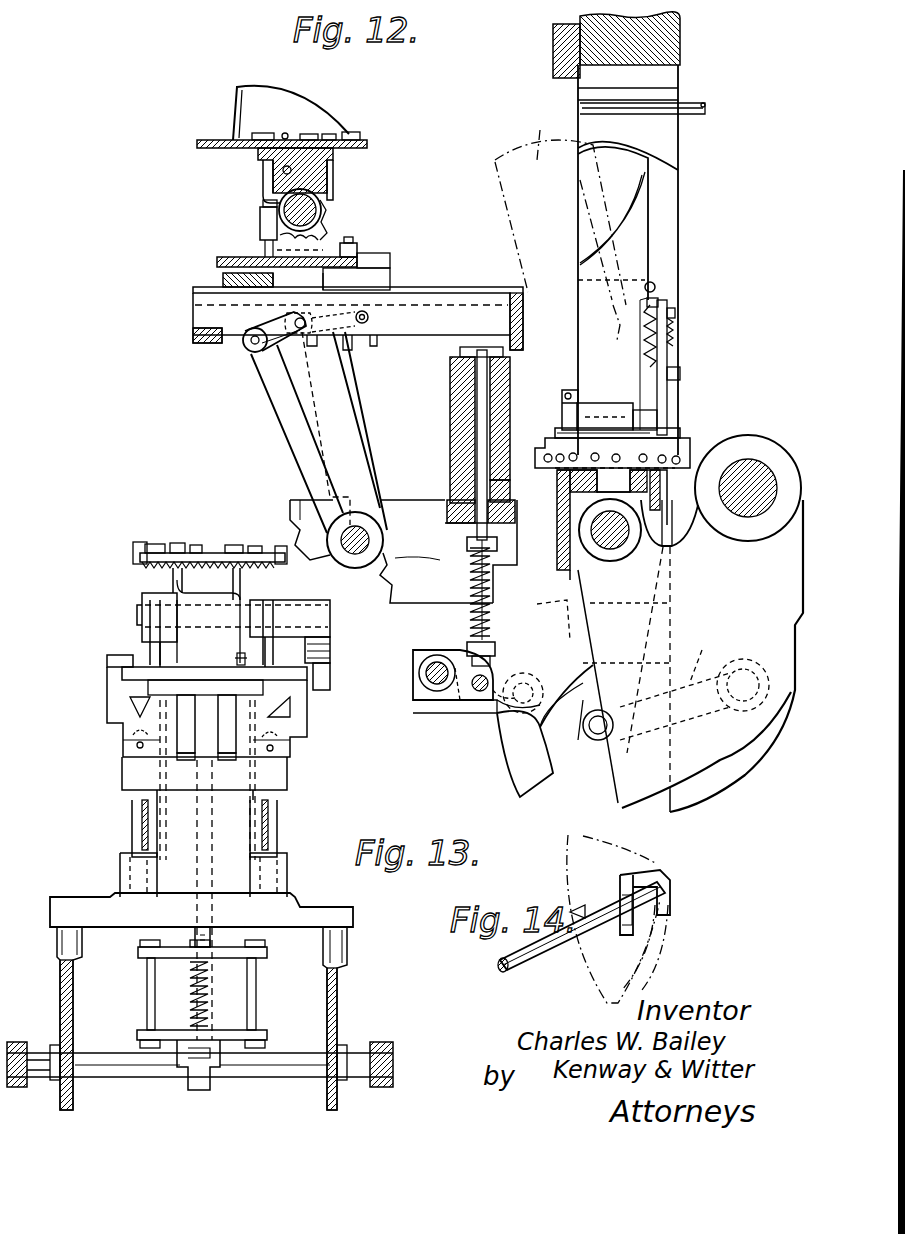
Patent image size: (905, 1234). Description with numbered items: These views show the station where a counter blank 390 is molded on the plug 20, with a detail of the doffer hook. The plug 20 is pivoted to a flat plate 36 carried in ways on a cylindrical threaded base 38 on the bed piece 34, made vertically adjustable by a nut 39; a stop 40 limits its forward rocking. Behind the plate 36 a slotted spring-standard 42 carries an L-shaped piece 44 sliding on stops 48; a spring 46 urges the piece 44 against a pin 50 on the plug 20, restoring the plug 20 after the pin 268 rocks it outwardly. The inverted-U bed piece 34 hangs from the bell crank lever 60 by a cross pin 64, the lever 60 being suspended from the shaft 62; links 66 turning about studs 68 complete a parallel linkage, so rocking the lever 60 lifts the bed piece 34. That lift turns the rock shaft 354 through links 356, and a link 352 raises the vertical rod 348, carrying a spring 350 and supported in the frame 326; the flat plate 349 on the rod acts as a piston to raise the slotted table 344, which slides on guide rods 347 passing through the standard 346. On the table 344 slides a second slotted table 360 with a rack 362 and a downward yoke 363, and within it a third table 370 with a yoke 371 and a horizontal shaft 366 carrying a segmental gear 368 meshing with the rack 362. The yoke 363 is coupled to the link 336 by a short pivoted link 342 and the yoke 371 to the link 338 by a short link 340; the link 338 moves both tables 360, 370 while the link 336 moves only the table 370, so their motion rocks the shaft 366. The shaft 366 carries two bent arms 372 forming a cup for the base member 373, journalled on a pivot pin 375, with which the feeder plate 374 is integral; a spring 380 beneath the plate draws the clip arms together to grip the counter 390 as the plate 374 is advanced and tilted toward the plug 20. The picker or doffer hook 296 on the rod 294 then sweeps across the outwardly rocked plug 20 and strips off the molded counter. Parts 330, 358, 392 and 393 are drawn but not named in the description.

In FIG. 12, the plug 20 is at (640, 227).
In FIG. 12, the pin 268 is at (656, 288).
In FIG. 12, the bed piece 34 is at (585, 743).
In FIG. 12, the flat plate 36 is at (565, 428).
In FIG. 12, the cylindrical threaded base 38 is at (660, 432).
In FIG. 12, the nut 39 is at (678, 448).
In FIG. 12, the stop 40 is at (640, 412).
In FIG. 12, the slotted spring-standard 42 is at (667, 393).
In FIG. 12, the L-shaped piece 44 is at (675, 313).
In FIG. 12, the spring 46 is at (645, 333).
In FIG. 12, the stops 48 is at (676, 338).
In FIG. 12, the pin 50 is at (680, 373).
In FIG. 12, the bell crank lever 60 is at (625, 796).
In FIG. 12, the shaft 62 is at (758, 470).
In FIG. 12, the cross pin 64 is at (615, 545).
In FIG. 12, the links 66 is at (703, 655).
In FIG. 12, the studs 68 is at (743, 682).
In FIG. 14, the rod 294 is at (520, 972).
In FIG. 14, the picker 296 is at (660, 878).
In FIG. 12, the frame 326 is at (413, 665).
In FIG. 13, the frame 326 is at (337, 1012).
In FIG. 12, the hub 330 is at (353, 555).
In FIG. 12, the link 336 is at (345, 398).
In FIG. 13, the link 336 is at (228, 737).
In FIG. 12, the link 338 is at (304, 460).
In FIG. 13, the link 338 is at (182, 732).
In FIG. 12, the short link 340 is at (252, 364).
In FIG. 12, the short pivoted link 342 is at (338, 340).
In FIG. 12, the slotted table 344 is at (455, 300).
In FIG. 13, the slotted table 344 is at (107, 725).
In FIG. 12, the standard 346 is at (410, 417).
In FIG. 13, the standard 346 is at (247, 880).
In FIG. 13, the guide rods 347 is at (132, 824).
In FIG. 12, the vertical rod 348 is at (487, 402).
In FIG. 13, the vertical rod 348 is at (195, 935).
In FIG. 12, the flat plate 349 is at (460, 352).
In FIG. 13, the flat plate 349 is at (187, 762).
In FIG. 12, the spring 350 is at (470, 583).
In FIG. 13, the spring 350 is at (192, 1010).
In FIG. 13, the link 352 is at (147, 1005).
In FIG. 12, the rock shaft 354 is at (437, 680).
In FIG. 13, the rock shaft 354 is at (265, 1078).
In FIG. 12, the links 356 is at (480, 710).
In FIG. 12, the nut 358 is at (468, 662).
In FIG. 13, the nut 358 is at (198, 1090).
In FIG. 12, the slotted table 360 is at (223, 281).
In FIG. 13, the slotted table 360 is at (107, 683).
In FIG. 12, the rack 362 is at (355, 245).
In FIG. 13, the rack 362 is at (330, 670).
In FIG. 12, the yoke 363 is at (378, 335).
In FIG. 12, the horizontal shaft 366 is at (322, 200).
In FIG. 13, the horizontal shaft 366 is at (140, 618).
In FIG. 12, the segmental gear 368 is at (330, 225).
In FIG. 13, the segmental gear 368 is at (330, 648).
In FIG. 12, the third table 370 is at (217, 262).
In FIG. 13, the third table 370 is at (283, 680).
In FIG. 12, the yoke 371 is at (240, 308).
In FIG. 12, the bent arms 372 is at (263, 188).
In FIG. 13, the bent arms 372 is at (182, 578).
In FIG. 12, the base member 373 is at (322, 178).
In FIG. 13, the base member 373 is at (242, 578).
In FIG. 12, the feeder plate 374 is at (197, 145).
In FIG. 13, the feeder plate 374 is at (205, 550).
In FIG. 12, the pivot pin 375 is at (282, 170).
In FIG. 13, the spring 380 is at (148, 566).
In FIG. 12, the counter blank 390 is at (292, 100).
In FIG. 14, the counter blank 390 is at (640, 855).
In FIG. 12, the slide 392 is at (260, 210).
In FIG. 13, the screw 393 is at (237, 659).